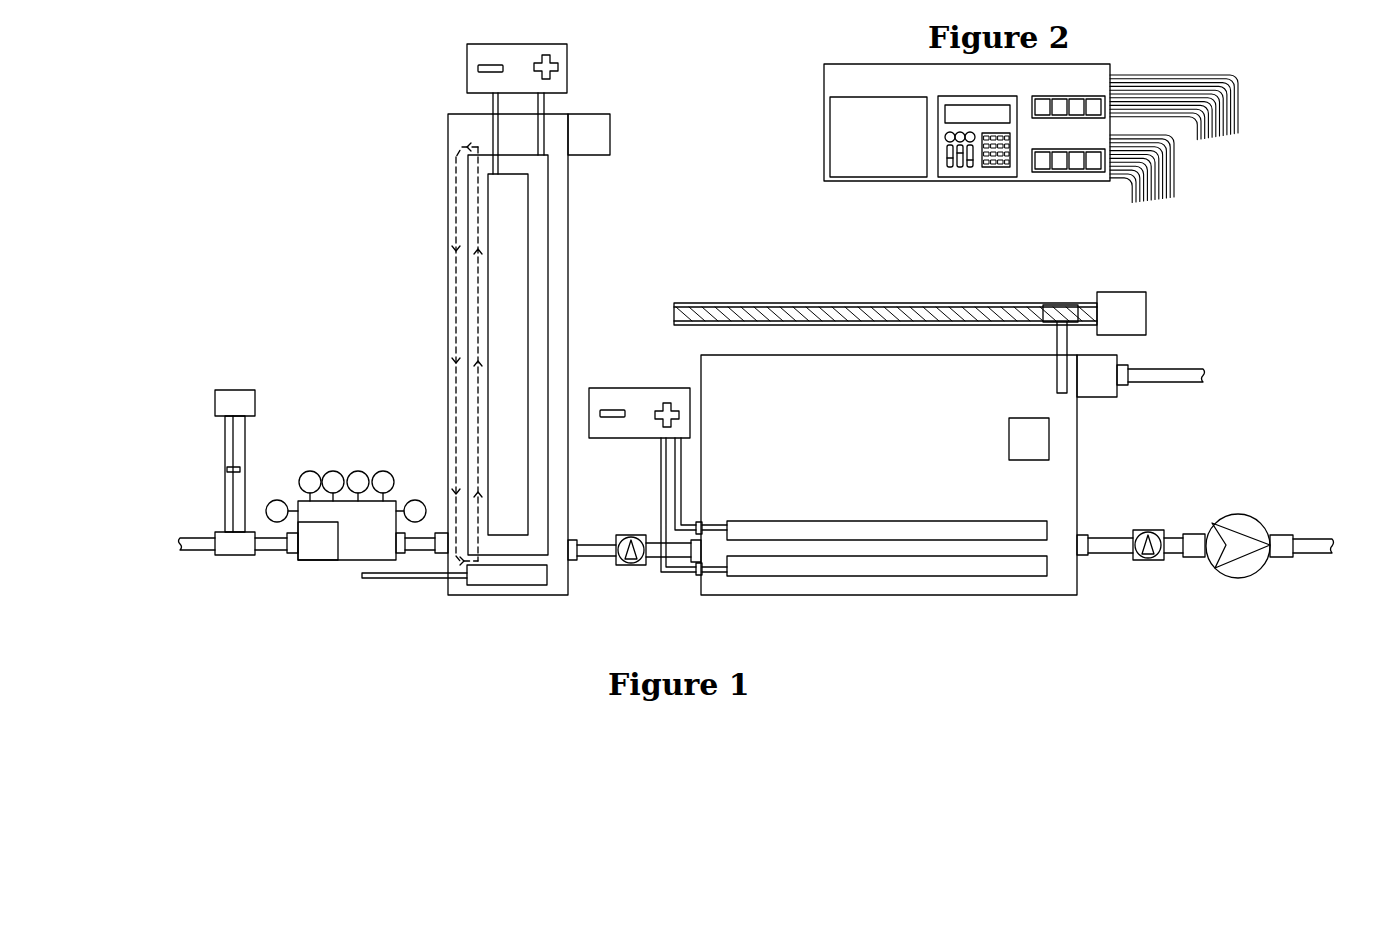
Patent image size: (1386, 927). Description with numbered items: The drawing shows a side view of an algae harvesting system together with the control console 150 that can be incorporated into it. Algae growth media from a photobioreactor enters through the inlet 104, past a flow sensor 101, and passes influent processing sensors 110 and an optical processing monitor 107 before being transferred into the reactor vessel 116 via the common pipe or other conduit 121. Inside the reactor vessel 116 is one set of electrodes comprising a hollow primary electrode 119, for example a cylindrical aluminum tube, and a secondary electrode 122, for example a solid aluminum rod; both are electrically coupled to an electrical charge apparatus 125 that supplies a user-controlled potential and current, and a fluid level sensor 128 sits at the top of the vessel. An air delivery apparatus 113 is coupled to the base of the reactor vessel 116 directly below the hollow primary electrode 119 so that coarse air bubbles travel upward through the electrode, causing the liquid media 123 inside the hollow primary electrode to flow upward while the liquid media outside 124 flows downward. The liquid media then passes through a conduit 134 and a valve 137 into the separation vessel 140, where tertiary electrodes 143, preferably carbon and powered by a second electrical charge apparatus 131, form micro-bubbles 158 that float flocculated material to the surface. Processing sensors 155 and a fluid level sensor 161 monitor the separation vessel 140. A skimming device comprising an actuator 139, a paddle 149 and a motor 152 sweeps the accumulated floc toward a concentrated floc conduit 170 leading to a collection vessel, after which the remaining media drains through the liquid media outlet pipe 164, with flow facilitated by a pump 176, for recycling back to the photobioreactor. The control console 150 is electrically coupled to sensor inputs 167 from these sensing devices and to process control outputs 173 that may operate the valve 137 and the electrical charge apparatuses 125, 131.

In FIG. 1, the flow sensor 101 is at (235, 402).
In FIG. 1, the inlet 104 is at (198, 544).
In FIG. 1, the optical processing monitor 107 is at (318, 542).
In FIG. 1, the influent processing sensors 110 is at (368, 533).
In FIG. 1, the air delivery apparatus 113 is at (507, 577).
In FIG. 1, the reactor vessel 116 is at (448, 176).
In FIG. 1, the hollow primary electrode 119 is at (468, 226).
In FIG. 1, the common pipe or other conduit 121 is at (435, 543).
In FIG. 1, the secondary electrode 122 is at (488, 297).
In FIG. 1, the liquid media inside the hollow primary electrode 123 is at (477, 442).
In FIG. 1, the liquid media outside the hollow primary electrode 124 is at (456, 463).
In FIG. 1, the electrical charge apparatus 125 is at (558, 83).
In FIG. 1, the fluid level sensor 128 is at (589, 136).
In FIG. 1, the electrical charge apparatus 131 is at (640, 400).
In FIG. 1, the conduit 134 is at (599, 550).
In FIG. 1, the valve 137 is at (641, 550).
In FIG. 1, the actuator 139 is at (833, 312).
In FIG. 1, the separation vessel 140 is at (813, 586).
In FIG. 1, the tertiary electrode 143 is at (923, 532).
In FIG. 1, the paddle 149 is at (1062, 341).
In FIG. 2, the control console 150 is at (1033, 175).
In FIG. 1, the motor 152 is at (1119, 319).
In FIG. 1, the processing sensors 155 is at (1029, 441).
In FIG. 1, the micro-bubbles 158 is at (969, 548).
In FIG. 1, the fluid level sensor 161 is at (1098, 376).
In FIG. 1, the liquid media outlet pipe 164 is at (1108, 545).
In FIG. 2, the sensor inputs 167 is at (1152, 198).
In FIG. 1, the concentrated floc conduit 170 is at (1167, 372).
In FIG. 2, the process control outputs 173 is at (1215, 138).
In FIG. 1, the pump 176 is at (1242, 545).